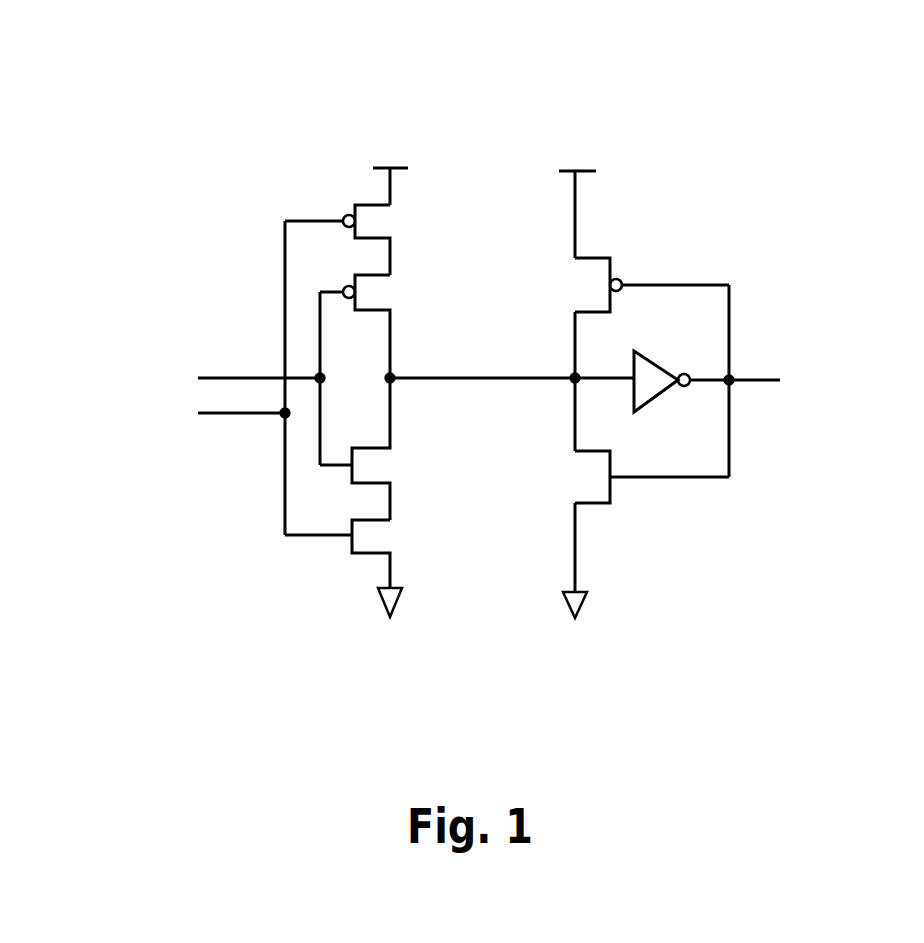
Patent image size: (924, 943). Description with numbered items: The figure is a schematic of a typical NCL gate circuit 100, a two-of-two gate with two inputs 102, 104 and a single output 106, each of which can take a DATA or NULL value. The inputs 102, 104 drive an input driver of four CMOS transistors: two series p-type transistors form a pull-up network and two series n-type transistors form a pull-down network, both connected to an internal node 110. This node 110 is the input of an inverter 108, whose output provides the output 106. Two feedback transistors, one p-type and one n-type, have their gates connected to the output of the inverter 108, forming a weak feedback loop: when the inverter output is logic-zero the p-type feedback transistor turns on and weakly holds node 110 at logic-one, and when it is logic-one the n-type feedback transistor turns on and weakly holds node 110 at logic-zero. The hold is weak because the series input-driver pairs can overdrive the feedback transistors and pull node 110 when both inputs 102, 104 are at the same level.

The NCL gate circuit 100 is at (792, 135).
The input 102 is at (253, 377).
The input 104 is at (253, 417).
The output 106 is at (752, 380).
The inverter 108 is at (643, 373).
The node 110 is at (573, 382).